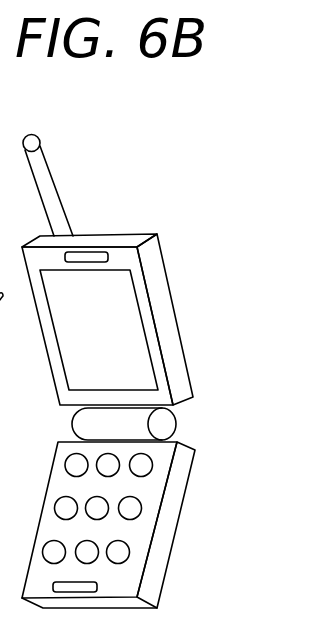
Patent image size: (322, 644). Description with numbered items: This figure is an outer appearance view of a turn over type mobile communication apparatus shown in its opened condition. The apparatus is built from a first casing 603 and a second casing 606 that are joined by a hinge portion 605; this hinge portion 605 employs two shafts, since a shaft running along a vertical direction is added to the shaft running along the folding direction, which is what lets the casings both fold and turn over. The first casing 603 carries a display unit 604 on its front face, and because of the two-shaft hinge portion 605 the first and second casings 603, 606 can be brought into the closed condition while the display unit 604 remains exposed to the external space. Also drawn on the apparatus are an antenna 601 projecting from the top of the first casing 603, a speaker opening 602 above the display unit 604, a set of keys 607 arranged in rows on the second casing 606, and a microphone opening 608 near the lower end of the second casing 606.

The antenna 601 is at (30, 131).
The speaker 602 is at (88, 249).
The first casing 603 is at (160, 232).
The display unit 604 is at (150, 330).
The hinge portion 605 is at (156, 423).
The second casing 606 is at (203, 447).
The operation keys 607 is at (150, 508).
The microphone 608 is at (106, 587).